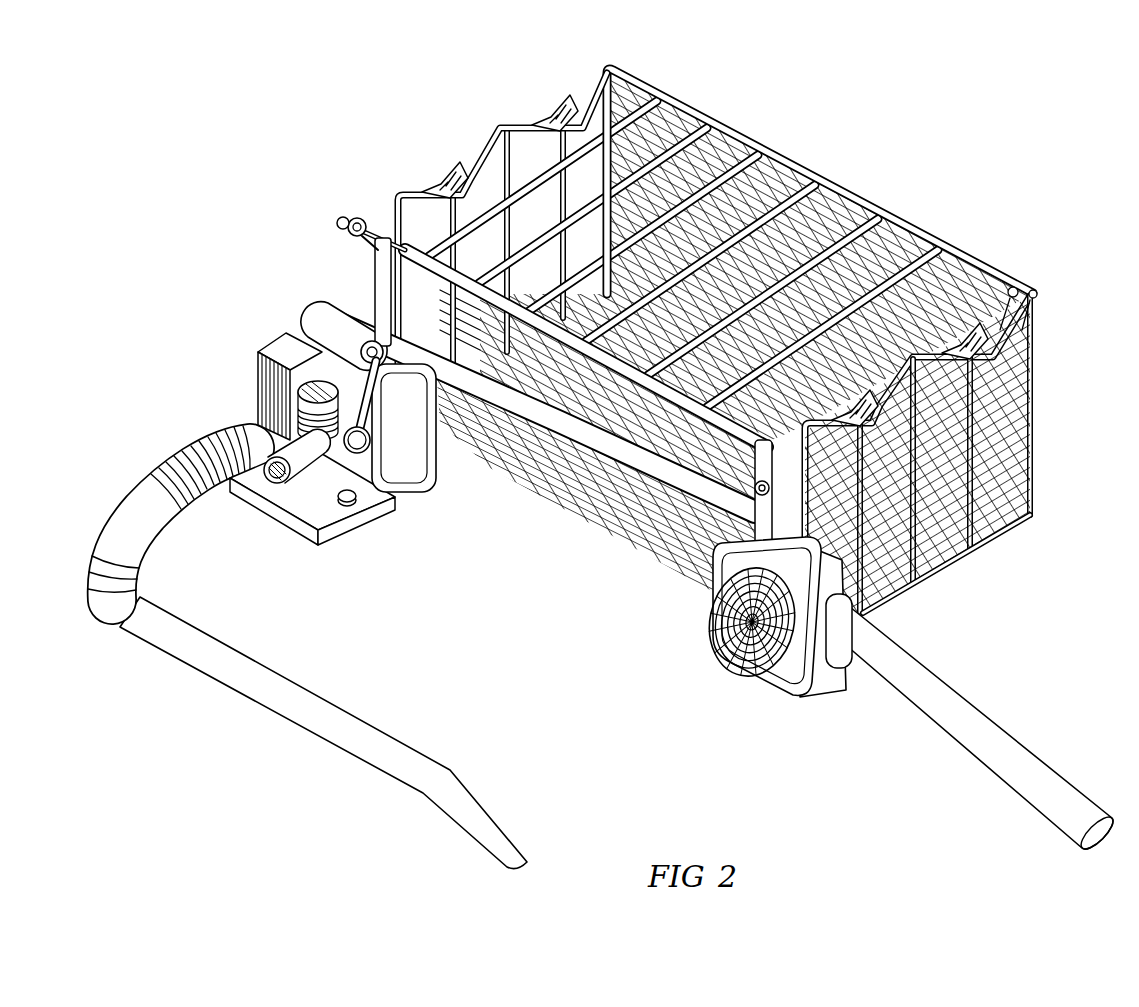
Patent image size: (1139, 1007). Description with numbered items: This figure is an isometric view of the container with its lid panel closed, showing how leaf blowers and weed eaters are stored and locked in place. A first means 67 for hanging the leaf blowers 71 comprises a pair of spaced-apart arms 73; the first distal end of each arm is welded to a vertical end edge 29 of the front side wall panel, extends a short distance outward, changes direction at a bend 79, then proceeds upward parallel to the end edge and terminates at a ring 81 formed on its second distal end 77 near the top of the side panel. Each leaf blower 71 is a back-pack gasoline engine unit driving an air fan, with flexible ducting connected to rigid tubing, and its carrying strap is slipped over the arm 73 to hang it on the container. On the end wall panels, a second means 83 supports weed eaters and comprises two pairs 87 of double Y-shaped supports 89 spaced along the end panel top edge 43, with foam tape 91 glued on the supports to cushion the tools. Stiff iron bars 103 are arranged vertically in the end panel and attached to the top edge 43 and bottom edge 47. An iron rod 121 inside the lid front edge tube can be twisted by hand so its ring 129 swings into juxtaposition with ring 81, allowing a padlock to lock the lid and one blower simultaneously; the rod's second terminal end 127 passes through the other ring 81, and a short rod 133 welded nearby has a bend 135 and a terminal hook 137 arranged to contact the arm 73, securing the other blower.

The second means 83 is at (430, 165).
The foam tape 91 is at (548, 104).
The pairs of double Y-shaped supports 87 is at (548, 110).
The second terminal end 127 is at (352, 215).
The ring 81 is at (358, 218).
The terminal hook 137 is at (350, 224).
The first means 67 is at (315, 236).
The iron rod 121 is at (360, 252).
The arms 73 is at (378, 270).
The top edge 43 is at (1022, 288).
The double Y-shaped supports 89 is at (880, 420).
The bottom edge 47 is at (1010, 533).
The vertical end edge 29 is at (950, 565).
The second distal end 77 is at (873, 620).
The leaf blowers 71 is at (372, 462).
The bend 79 is at (707, 597).
The bend 135 is at (599, 635).
The ring 129 is at (632, 543).
The short rod 133 is at (433, 547).
The stiff iron bars 103 is at (481, 582).